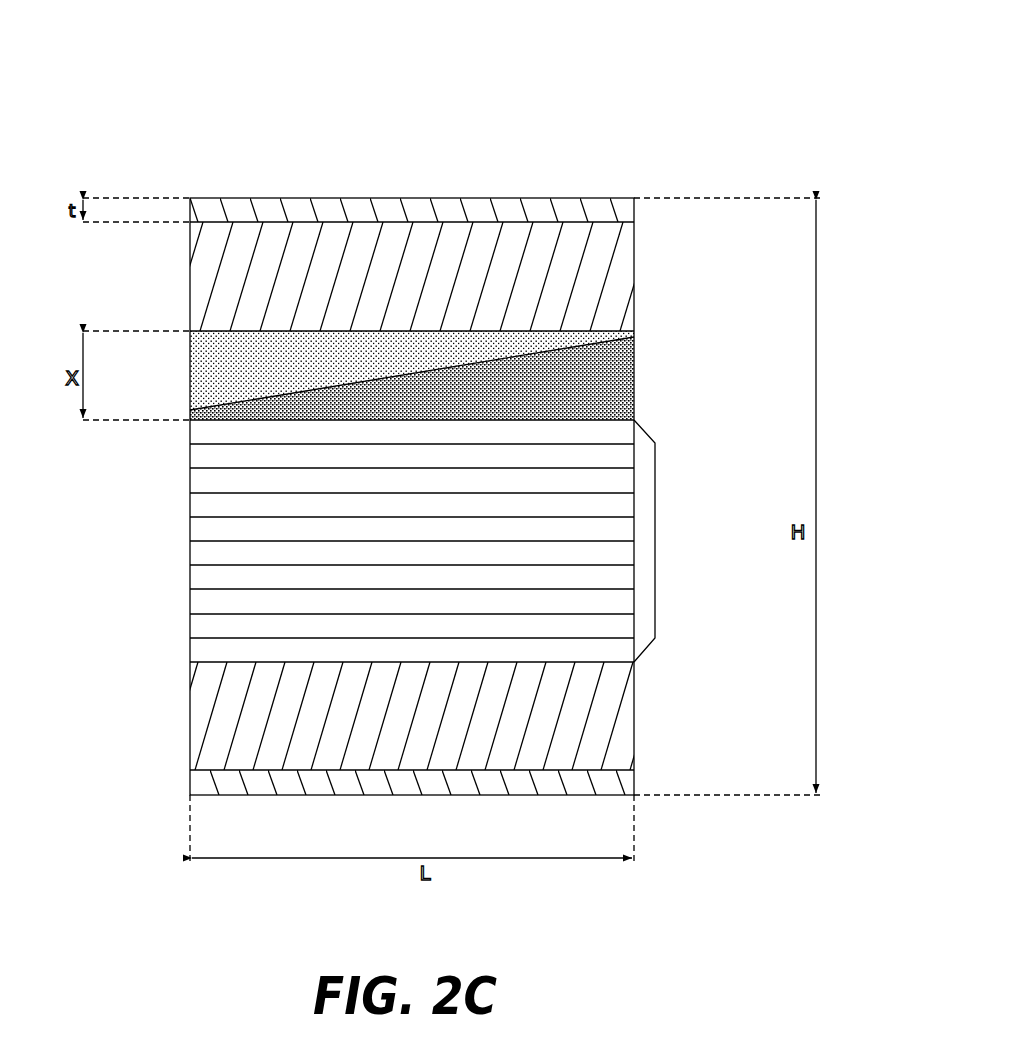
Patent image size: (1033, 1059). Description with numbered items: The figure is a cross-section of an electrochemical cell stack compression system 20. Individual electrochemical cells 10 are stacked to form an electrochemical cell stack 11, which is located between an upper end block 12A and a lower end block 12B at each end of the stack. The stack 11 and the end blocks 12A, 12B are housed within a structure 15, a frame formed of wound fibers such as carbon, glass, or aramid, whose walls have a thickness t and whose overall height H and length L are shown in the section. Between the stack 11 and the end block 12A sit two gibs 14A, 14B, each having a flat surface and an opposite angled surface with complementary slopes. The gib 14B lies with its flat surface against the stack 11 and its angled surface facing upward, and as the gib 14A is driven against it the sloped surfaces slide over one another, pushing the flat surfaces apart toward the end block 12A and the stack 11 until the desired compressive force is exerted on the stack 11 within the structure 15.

The electrochemical cell stack compression system 20 is at (632, 80).
The structure 15 is at (593, 198).
The end block 12A is at (634, 272).
The gib 14A is at (634, 336).
The gib 14B is at (634, 399).
The electrochemical cell 10 is at (606, 488).
The electrochemical cell stack 11 is at (656, 546).
The end block 12B is at (635, 730).